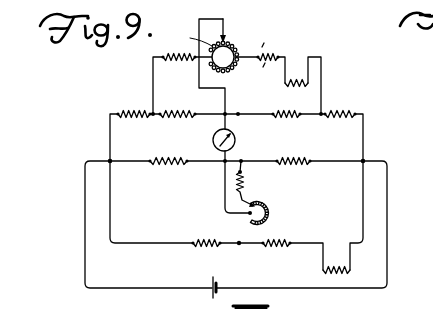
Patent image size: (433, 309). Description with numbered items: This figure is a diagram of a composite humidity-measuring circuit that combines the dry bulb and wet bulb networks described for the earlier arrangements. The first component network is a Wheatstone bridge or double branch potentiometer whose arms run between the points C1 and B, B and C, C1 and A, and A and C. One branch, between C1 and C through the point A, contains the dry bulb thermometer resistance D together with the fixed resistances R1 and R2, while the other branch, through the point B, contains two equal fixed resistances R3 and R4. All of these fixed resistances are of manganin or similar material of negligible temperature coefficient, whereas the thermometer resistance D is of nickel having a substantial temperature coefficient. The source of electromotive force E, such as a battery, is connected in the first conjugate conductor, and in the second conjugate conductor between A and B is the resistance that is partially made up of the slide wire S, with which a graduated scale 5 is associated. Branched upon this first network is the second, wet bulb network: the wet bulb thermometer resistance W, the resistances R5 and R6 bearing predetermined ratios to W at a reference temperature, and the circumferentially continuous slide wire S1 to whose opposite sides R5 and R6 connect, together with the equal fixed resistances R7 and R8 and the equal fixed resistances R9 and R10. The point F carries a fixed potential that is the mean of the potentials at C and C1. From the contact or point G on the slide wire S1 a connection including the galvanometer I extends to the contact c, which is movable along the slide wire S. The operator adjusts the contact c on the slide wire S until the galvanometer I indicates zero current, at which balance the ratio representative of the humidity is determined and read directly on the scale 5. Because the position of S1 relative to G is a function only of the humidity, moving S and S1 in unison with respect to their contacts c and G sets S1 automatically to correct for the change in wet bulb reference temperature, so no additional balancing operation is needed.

The contact G is at (226, 33).
The slide wire resistance S1 is at (188, 38).
The resistance R5 is at (176, 72).
The fixed resistance R7 is at (177, 103).
The fixed resistance R9 is at (134, 111).
The resistance R6 is at (268, 55).
The wet bulb thermometer resistance W is at (298, 78).
The fixed resistance R10 is at (338, 112).
The fixed resistance R8 is at (290, 118).
The point F is at (238, 113).
The galvanometer I is at (236, 140).
The point C is at (364, 160).
The point C1 is at (110, 160).
The point B is at (243, 161).
The potentiometer resistor P is at (245, 178).
The fixed resistance R3 is at (169, 166).
The fixed resistance R4 is at (298, 164).
The slide wire S is at (269, 211).
The contact c is at (260, 203).
The graduated scale 5 is at (267, 220).
The thermometer resistance D is at (337, 265).
The fixed resistance R1 is at (216, 240).
The fixed resistance R2 is at (274, 247).
The point A is at (239, 245).
The source of electromotive force E is at (218, 283).